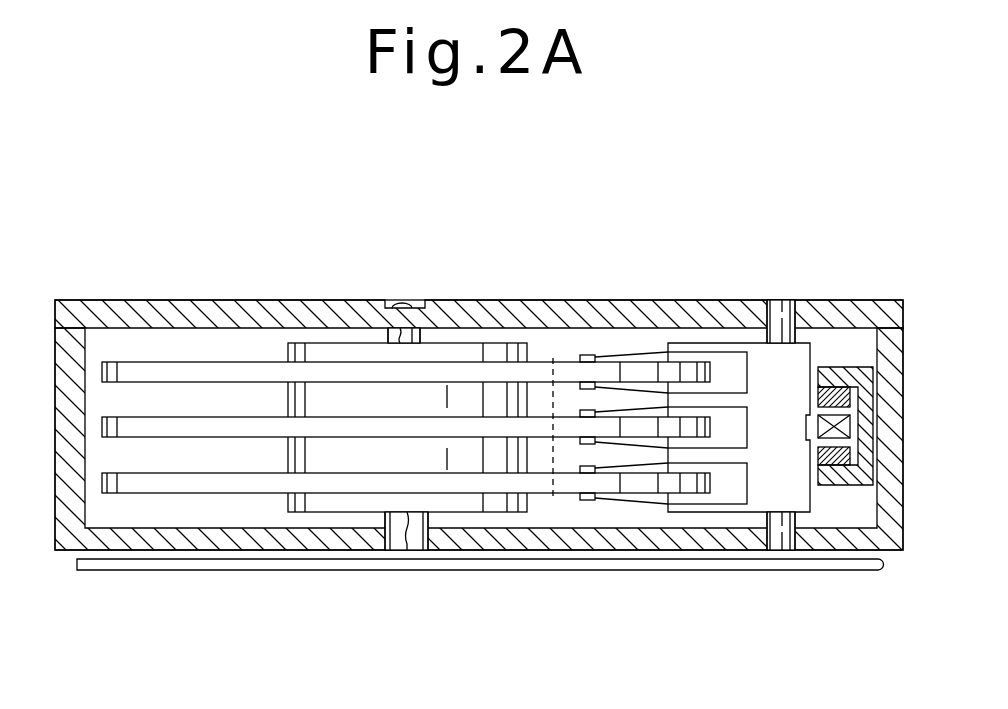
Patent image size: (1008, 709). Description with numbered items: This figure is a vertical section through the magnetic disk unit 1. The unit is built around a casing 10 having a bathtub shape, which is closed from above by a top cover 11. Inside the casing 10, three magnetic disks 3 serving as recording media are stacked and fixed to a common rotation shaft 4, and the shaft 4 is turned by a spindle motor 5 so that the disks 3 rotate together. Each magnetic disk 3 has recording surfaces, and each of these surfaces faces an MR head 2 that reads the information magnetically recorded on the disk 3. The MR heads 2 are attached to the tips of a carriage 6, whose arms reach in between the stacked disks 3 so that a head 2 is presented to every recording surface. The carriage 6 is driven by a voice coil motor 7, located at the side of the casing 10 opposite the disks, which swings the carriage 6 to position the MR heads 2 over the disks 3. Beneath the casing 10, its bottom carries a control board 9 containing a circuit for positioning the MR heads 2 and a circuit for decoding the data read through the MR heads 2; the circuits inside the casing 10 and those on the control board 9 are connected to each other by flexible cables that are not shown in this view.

The magnetic disk unit 1 is at (627, 262).
The MR head 2 is at (587, 500).
The magnetic disk 3 is at (243, 372).
The rotation shaft 4 is at (402, 540).
The spindle motor 5 is at (322, 503).
The carriage 6 is at (708, 345).
The voice coil motor 7 is at (843, 496).
The control board 9 is at (195, 565).
The casing 10 is at (890, 535).
The top cover 11 is at (165, 308).